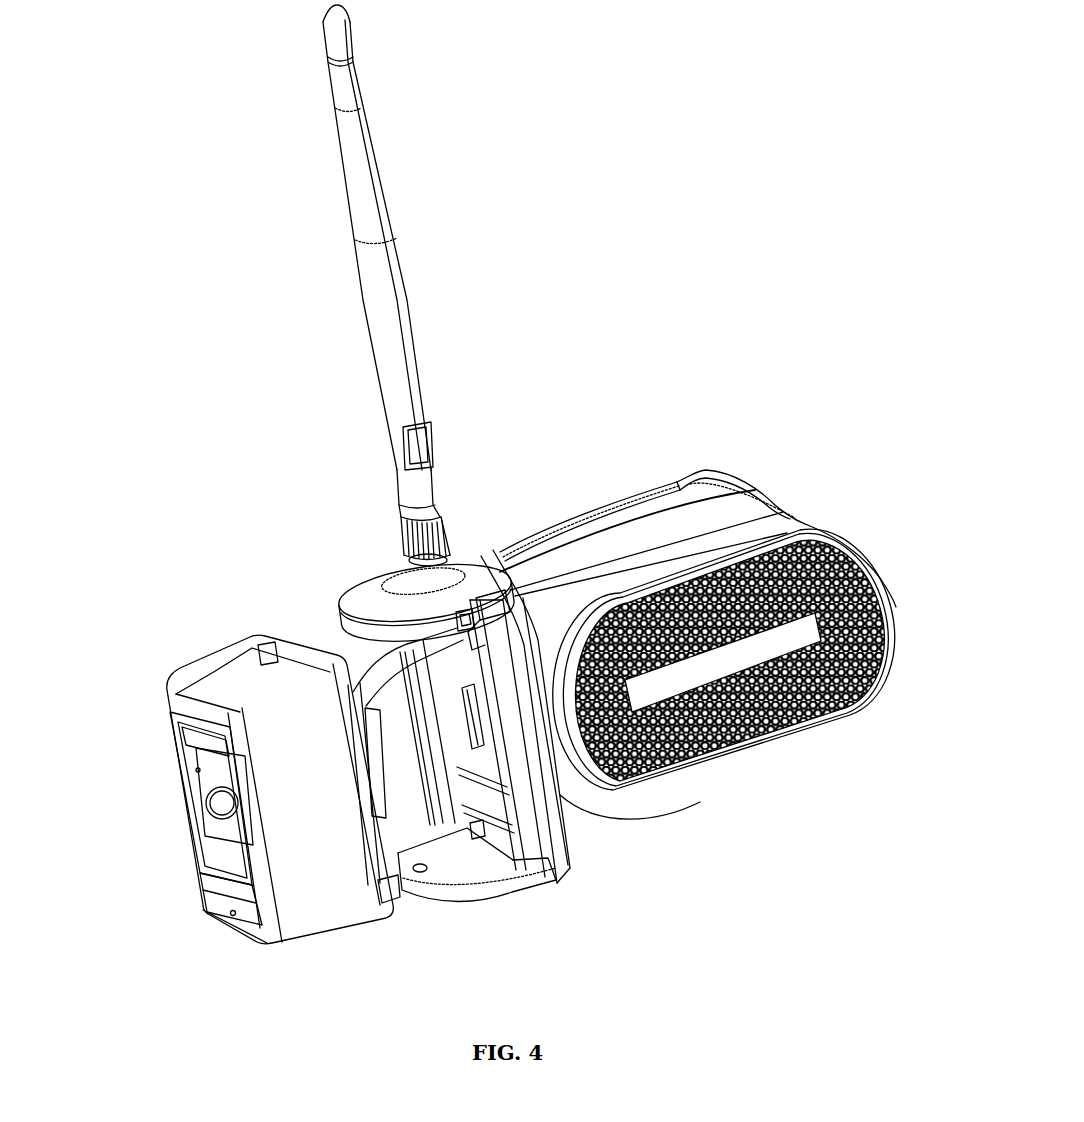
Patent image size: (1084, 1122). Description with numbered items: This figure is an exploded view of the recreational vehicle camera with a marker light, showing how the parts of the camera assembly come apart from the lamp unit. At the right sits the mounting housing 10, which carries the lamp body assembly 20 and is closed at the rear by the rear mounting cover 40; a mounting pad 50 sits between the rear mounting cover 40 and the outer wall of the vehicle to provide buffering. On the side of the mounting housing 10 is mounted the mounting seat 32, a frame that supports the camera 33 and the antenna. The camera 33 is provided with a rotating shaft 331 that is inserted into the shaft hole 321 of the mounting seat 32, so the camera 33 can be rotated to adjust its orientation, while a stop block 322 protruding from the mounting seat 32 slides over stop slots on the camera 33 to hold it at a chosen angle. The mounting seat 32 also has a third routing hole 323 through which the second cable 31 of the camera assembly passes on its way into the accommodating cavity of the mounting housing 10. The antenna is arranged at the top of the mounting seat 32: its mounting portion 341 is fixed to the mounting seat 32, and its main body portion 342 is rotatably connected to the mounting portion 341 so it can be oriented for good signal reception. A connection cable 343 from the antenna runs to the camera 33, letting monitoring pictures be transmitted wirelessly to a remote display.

The mounting housing 10 is at (745, 498).
The lamp body assembly 20 is at (790, 717).
The rear mounting cover 40 is at (715, 487).
The mounting pad 50 is at (665, 485).
The second cable 31 is at (468, 632).
The mounting seat 32 is at (527, 858).
The shaft hole 321 is at (420, 870).
The stop block 322 is at (472, 732).
The third routing hole 323 is at (455, 622).
The camera 33 is at (270, 895).
The rotating shaft 331 is at (263, 652).
The mounting portion 341 is at (408, 484).
The main body portion 342 is at (387, 283).
The connection cable 343 is at (385, 652).